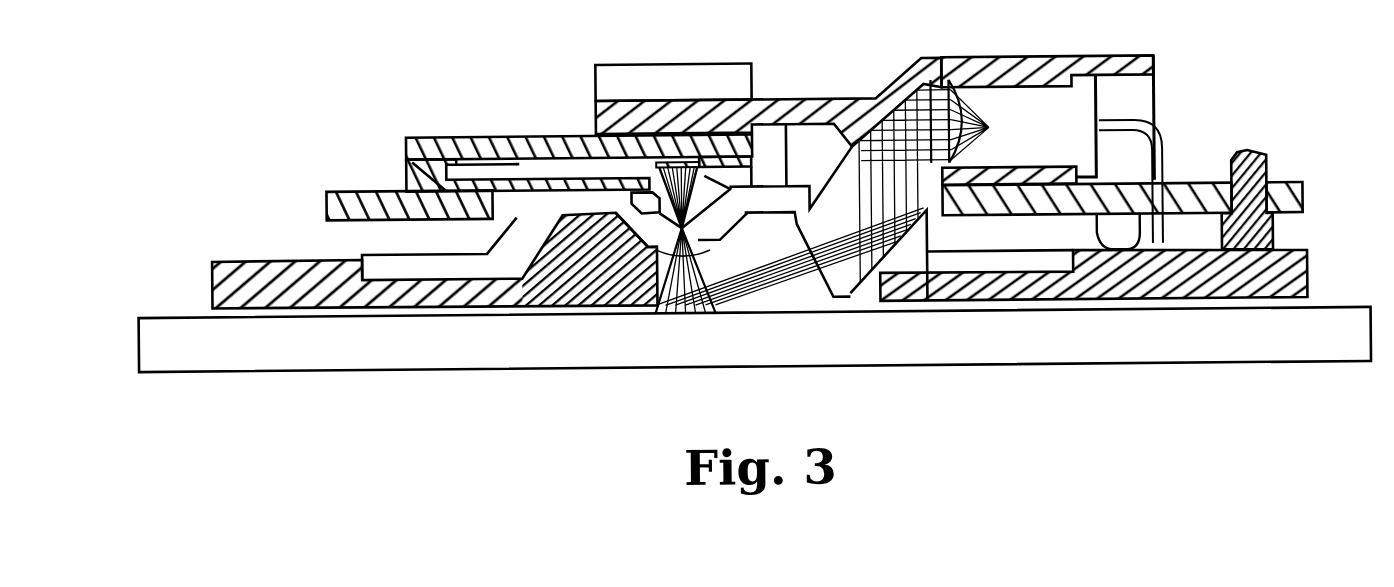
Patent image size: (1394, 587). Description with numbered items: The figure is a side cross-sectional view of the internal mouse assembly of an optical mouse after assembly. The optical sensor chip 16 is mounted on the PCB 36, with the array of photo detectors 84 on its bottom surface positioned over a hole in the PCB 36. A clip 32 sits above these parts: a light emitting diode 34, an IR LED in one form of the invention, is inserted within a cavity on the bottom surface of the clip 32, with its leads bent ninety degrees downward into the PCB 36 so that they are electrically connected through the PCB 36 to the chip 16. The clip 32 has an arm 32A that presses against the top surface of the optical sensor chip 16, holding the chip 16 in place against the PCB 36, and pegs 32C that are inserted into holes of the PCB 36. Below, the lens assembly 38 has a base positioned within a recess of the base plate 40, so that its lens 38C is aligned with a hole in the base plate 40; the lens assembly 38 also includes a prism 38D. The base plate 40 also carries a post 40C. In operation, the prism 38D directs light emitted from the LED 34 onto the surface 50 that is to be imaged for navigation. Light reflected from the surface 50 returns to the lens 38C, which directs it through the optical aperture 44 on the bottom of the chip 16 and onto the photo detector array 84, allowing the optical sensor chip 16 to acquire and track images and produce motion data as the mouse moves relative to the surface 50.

The optical sensor chip 16 is at (510, 133).
The clip 32 is at (797, 98).
The arm 32A is at (620, 81).
The pegs 32C is at (1122, 237).
The light emitting diode (LED) 34 is at (1103, 102).
The PCB 36 is at (355, 187).
The lens assembly 38 is at (360, 247).
The lens 38C is at (657, 249).
The prism 38D is at (818, 175).
The base plate 40 is at (210, 284).
The post 40C is at (1257, 160).
The optical aperture 44 is at (697, 217).
The surface 50 is at (137, 342).
The array of photo detectors 84 is at (693, 162).